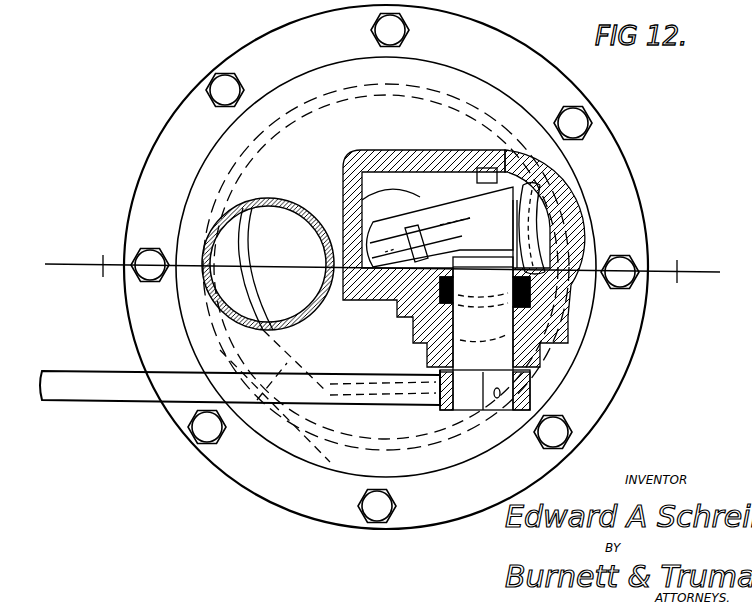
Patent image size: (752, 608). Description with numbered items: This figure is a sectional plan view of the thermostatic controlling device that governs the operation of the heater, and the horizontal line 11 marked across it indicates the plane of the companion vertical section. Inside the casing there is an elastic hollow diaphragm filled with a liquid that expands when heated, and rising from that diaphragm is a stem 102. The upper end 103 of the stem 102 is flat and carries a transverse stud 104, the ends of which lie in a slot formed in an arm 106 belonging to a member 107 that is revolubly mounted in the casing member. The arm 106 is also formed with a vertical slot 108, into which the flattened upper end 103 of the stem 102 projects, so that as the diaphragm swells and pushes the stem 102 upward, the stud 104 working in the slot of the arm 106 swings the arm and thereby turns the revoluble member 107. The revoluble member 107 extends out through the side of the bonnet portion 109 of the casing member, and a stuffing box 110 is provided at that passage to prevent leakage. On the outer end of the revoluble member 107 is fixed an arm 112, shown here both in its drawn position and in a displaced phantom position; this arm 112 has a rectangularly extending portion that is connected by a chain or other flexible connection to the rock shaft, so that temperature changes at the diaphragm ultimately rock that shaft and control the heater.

The section line 11— 11 is at (384, 269).
The stem 102 is at (452, 231).
The upper end of stem 103 is at (368, 302).
The transverse stud 104 is at (332, 243).
The arm 106 is at (447, 217).
The revoluble member 107 is at (518, 262).
The vertical slot 108 is at (413, 227).
The bonnet portion 109 is at (548, 190).
The stuffing box 110 is at (568, 329).
The arm 112 is at (74, 378).